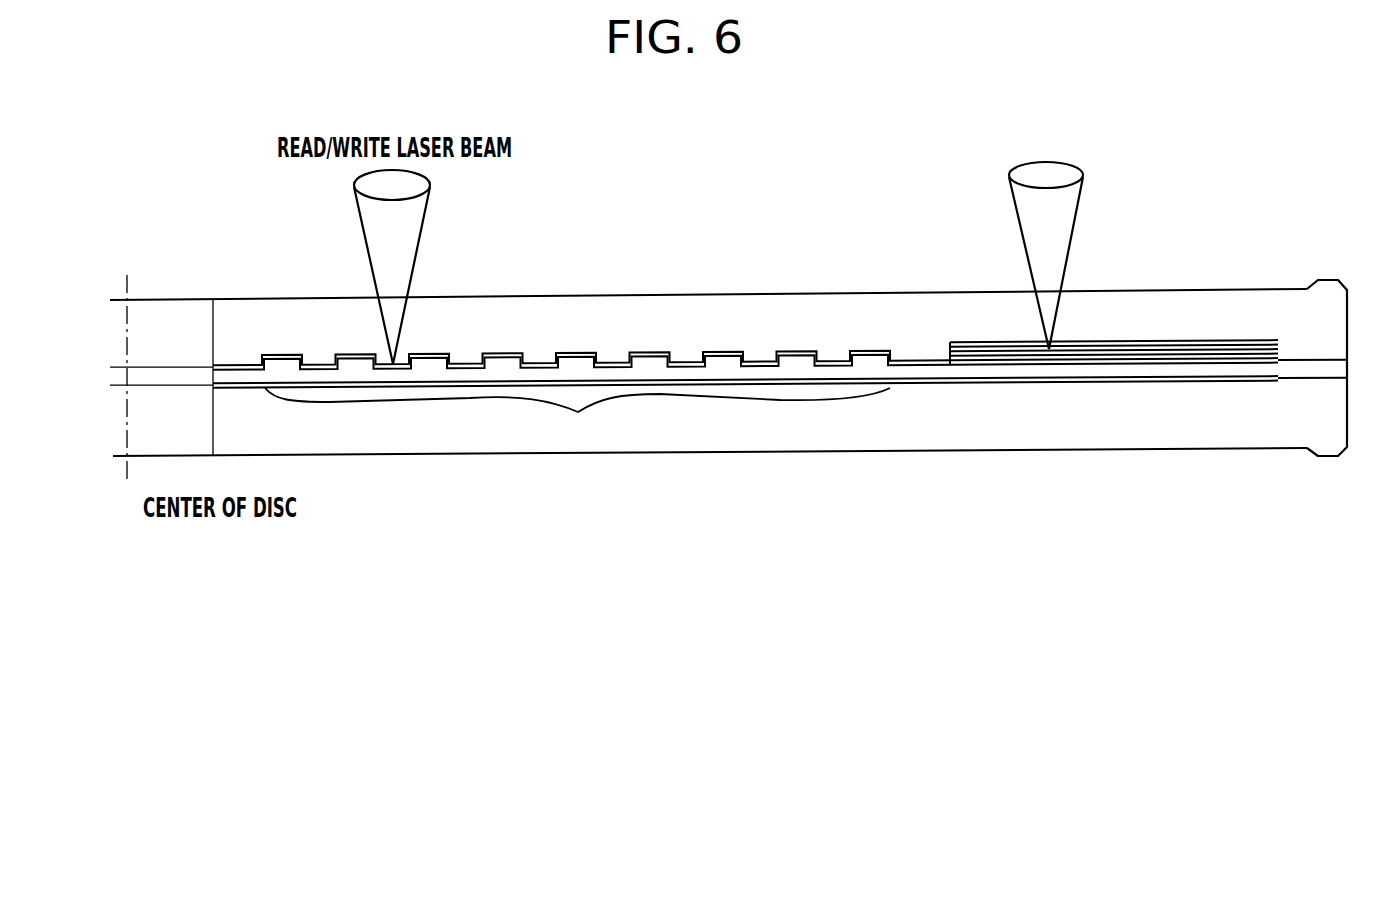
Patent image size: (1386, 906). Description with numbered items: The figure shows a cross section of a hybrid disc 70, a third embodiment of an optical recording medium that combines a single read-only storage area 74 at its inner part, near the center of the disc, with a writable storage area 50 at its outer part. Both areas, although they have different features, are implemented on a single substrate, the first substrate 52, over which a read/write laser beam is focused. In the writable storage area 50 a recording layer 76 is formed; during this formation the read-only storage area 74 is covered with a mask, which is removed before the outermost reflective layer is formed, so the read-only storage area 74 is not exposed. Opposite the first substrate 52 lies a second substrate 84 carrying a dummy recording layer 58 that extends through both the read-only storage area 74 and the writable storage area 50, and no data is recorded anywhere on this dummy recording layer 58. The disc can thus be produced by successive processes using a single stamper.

The hybrid disc 70 is at (1220, 547).
The first substrate 52 is at (854, 318).
The second substrate 84 is at (814, 430).
The recording layer 76 is at (511, 348).
The writable storage area 50 is at (1278, 385).
The read-only storage area 74 is at (577, 419).
The dummy recording layer 58 is at (632, 385).